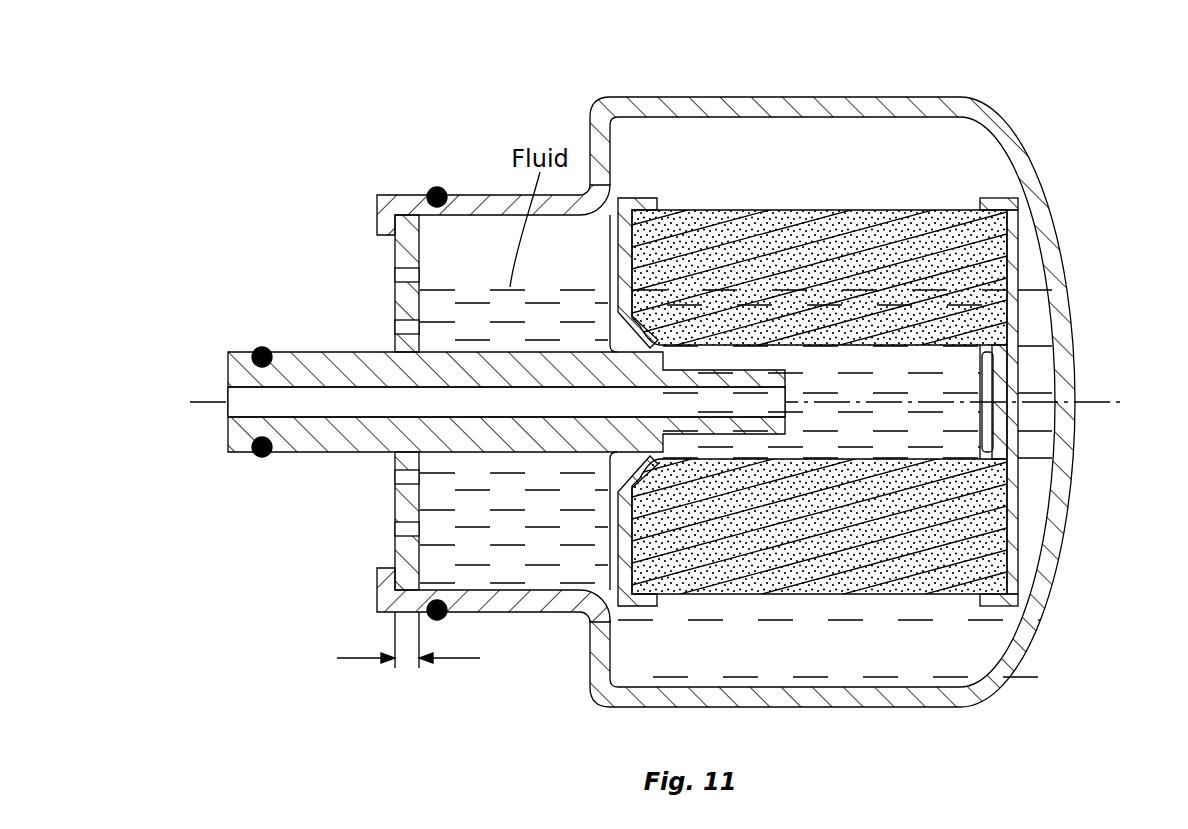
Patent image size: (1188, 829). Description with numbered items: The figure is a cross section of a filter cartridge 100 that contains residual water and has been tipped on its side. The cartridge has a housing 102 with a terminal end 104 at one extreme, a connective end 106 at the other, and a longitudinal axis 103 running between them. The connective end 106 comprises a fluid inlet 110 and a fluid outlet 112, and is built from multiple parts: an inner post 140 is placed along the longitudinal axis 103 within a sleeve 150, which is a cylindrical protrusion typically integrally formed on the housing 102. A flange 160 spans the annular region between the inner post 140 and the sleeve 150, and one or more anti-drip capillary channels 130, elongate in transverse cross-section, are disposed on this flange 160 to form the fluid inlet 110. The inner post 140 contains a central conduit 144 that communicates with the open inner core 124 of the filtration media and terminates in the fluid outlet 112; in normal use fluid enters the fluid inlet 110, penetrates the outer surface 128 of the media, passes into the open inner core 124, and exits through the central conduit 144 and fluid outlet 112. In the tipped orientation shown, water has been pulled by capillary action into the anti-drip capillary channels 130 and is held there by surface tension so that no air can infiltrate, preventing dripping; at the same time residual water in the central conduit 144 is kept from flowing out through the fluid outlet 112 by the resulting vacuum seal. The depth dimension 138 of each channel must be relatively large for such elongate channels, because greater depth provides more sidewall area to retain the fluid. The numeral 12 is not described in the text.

The filter cartridge 100 is at (874, 374).
The housing 102 is at (870, 374).
The longitudinal axis 103 is at (1105, 402).
The terminal end 104 is at (1058, 300).
The connective end 106 is at (400, 425).
The fluid inlet 110 is at (400, 323).
The anti-drip capillary channels 130 is at (400, 528).
The fluid outlet 112 is at (469, 506).
The open inner core 124 is at (966, 402).
The coil 12 is at (1007, 505).
The outer surface 128 is at (879, 438).
The depth dimension 138 is at (455, 660).
The inner post 140 is at (302, 455).
The central conduit 144 is at (580, 422).
The sleeve 150 is at (478, 193).
The flange 160 is at (400, 262).